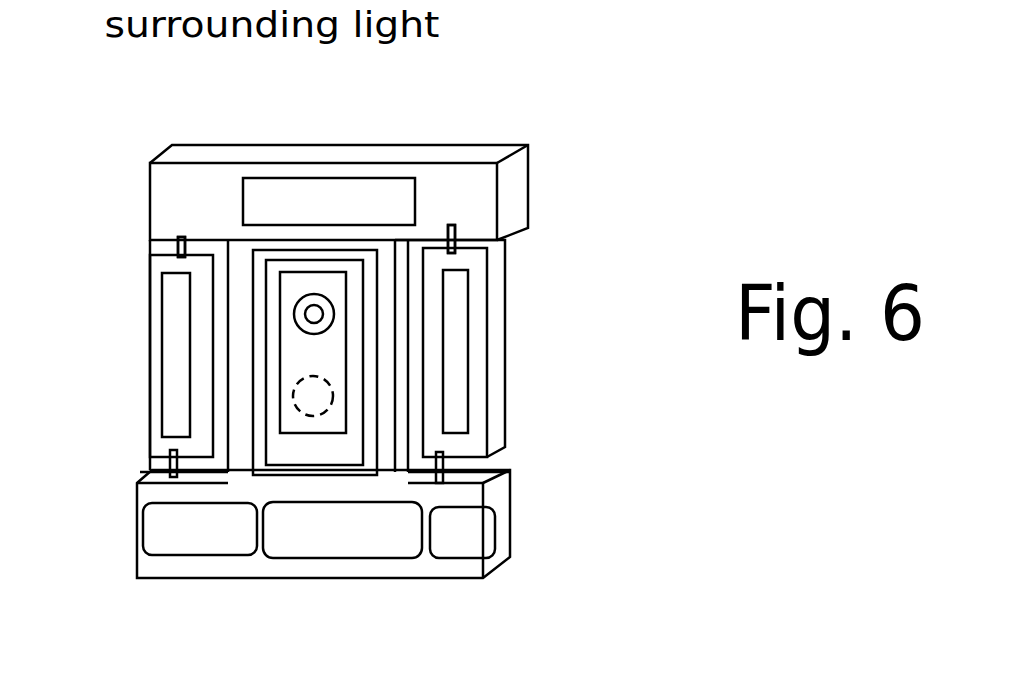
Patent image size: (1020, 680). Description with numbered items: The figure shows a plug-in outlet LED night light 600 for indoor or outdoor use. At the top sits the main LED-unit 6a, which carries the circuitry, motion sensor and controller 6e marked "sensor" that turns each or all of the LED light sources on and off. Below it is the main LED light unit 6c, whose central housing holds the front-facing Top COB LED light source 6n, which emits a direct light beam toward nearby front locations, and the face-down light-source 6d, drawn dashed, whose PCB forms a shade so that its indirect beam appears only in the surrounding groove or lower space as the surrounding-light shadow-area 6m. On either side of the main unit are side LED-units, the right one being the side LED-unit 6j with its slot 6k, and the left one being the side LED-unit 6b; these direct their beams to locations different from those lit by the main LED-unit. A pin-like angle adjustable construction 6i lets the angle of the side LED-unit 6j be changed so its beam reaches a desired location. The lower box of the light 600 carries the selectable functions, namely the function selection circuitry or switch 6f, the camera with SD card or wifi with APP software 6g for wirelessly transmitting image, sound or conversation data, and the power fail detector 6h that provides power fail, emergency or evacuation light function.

The LED light 600 is at (730, 455).
The main LED-unit 6a is at (508, 193).
The left side panel 6b is at (185, 206).
The main LED light unit 6c is at (282, 250).
The light-source 6d is at (330, 392).
The motion sensor and controller 6e is at (380, 200).
The function selection circuitry or switch 6f is at (193, 552).
The camera with SD card or wifi with APP 6g is at (335, 560).
The power fail detector 6h is at (497, 537).
The angle adjustable construction 6i is at (456, 212).
The side LED-unit 6j is at (493, 330).
The right panel slot 6k is at (455, 410).
The shadow-area 6m is at (280, 275).
The Top COB LED light source 6n is at (453, 212).